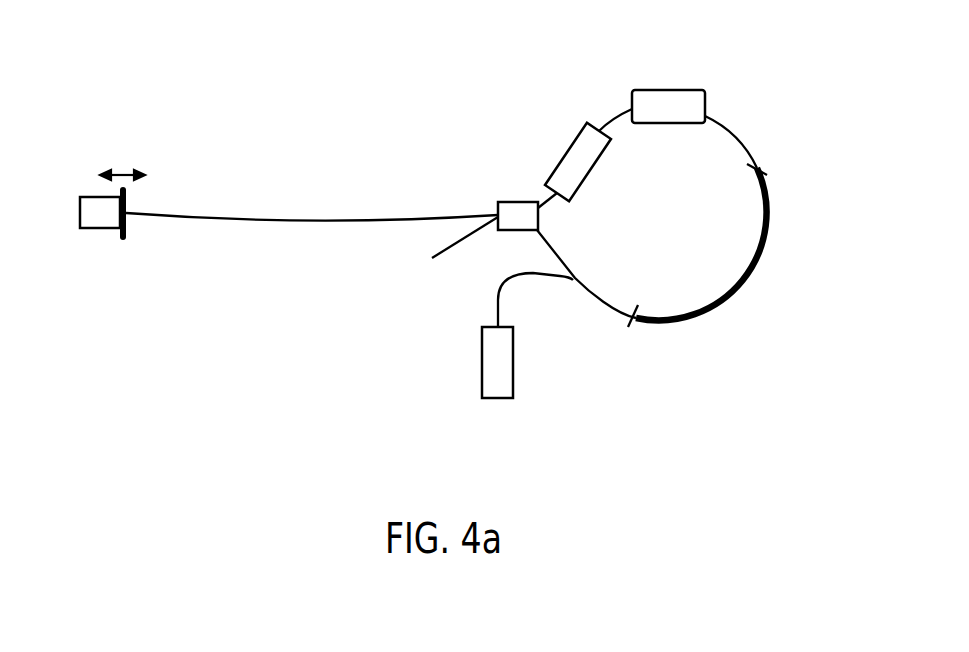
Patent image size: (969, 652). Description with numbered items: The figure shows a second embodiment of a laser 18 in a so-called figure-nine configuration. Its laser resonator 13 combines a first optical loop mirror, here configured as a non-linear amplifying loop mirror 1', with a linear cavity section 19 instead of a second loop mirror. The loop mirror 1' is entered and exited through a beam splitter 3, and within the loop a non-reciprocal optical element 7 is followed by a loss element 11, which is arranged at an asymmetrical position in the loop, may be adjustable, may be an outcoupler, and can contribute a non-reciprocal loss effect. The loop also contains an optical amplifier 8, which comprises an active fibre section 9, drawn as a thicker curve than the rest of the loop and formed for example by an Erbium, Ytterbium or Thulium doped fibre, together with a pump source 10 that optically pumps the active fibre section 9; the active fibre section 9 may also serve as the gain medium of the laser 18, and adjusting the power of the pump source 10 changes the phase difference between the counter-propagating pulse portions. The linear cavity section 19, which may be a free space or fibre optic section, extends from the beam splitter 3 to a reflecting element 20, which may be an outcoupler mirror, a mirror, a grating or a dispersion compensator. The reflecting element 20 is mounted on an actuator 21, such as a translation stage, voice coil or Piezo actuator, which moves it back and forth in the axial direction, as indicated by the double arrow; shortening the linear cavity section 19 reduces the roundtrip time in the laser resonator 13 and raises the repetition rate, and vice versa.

The non-linear amplifying loop mirror 1' is at (760, 66).
The beam splitter 3 is at (517, 215).
The non-reciprocal optical element 7 is at (570, 153).
The optical amplifier 8 is at (790, 247).
The active fibre section 9 is at (713, 308).
The pump source 10 is at (505, 367).
The loss element 11 is at (680, 100).
The laser resonator 13 is at (482, 111).
The laser 18 is at (196, 111).
The linear cavity section 19 is at (347, 220).
The reflecting element 20 is at (122, 237).
The actuator 21 is at (98, 222).